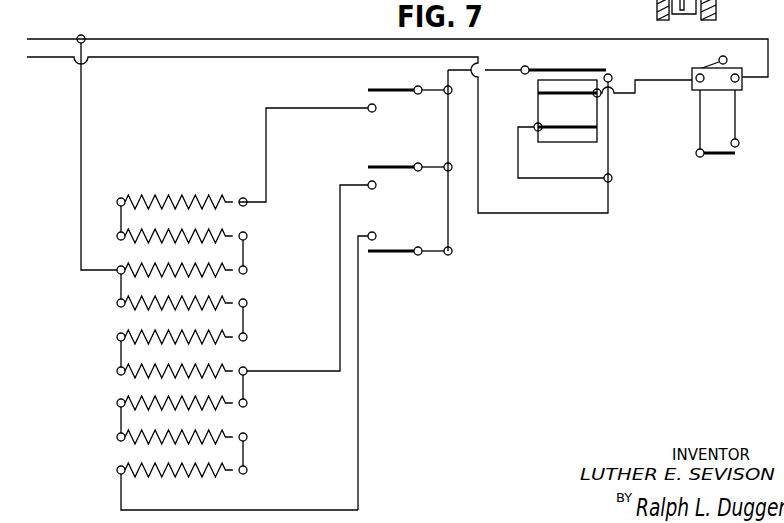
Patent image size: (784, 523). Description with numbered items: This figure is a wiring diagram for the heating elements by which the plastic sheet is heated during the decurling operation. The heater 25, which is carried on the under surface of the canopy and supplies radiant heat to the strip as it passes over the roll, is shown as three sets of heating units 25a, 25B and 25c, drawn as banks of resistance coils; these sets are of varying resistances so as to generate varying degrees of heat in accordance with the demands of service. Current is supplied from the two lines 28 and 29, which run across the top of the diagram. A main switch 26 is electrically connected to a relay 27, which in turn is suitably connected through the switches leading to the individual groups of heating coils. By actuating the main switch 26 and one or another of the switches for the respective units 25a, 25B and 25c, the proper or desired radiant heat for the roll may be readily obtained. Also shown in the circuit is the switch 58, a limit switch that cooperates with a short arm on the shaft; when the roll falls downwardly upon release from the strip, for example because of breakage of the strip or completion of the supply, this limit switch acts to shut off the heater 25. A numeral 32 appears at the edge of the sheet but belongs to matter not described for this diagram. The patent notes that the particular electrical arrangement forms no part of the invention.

The heater 25 is at (178, 192).
The heating unit 25a is at (397, 250).
The heating unit 25B is at (398, 170).
The heating unit 25c is at (398, 93).
The main switch 26 is at (716, 156).
The relay 27 is at (548, 105).
The line 28 is at (531, 39).
The line 29 is at (322, 58).
The motor 32 is at (449, 10).
The switch 58 is at (717, 63).